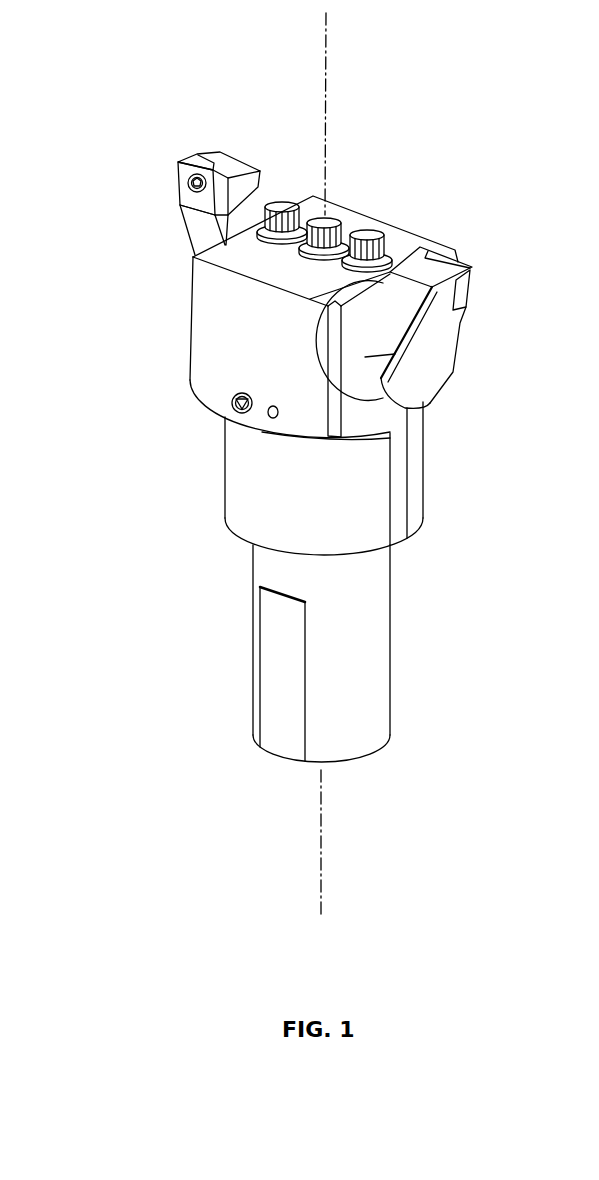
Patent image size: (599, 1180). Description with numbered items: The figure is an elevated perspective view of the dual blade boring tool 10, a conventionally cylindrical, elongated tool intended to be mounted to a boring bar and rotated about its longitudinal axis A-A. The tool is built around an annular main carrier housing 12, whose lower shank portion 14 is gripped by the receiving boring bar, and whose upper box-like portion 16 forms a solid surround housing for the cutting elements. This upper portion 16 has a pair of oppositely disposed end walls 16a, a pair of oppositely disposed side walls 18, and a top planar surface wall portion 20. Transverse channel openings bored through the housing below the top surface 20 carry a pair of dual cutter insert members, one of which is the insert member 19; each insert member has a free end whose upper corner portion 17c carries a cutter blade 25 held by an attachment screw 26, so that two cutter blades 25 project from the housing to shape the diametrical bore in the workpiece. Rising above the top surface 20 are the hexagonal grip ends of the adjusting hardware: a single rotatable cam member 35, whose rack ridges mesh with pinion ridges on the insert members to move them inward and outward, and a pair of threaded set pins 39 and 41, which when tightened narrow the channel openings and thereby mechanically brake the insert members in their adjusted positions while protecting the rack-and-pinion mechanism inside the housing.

The dual blade boring tool 10 is at (496, 512).
The main carrier housing 12 is at (243, 512).
The lower shank portion 14 is at (368, 683).
The box-like upper portion of the carrier housing 16 is at (208, 360).
The end walls 16a is at (205, 312).
The upper corner portion 17c is at (203, 220).
The side walls 18 is at (363, 418).
The cutter insert member 19 is at (432, 357).
The top planar surface wall portion 20 is at (303, 284).
The cutter blade 25 is at (185, 158).
The attachment screw 26 is at (188, 183).
The cam member 35 is at (325, 221).
The set pin 39 is at (283, 205).
The set pin 41 is at (368, 236).